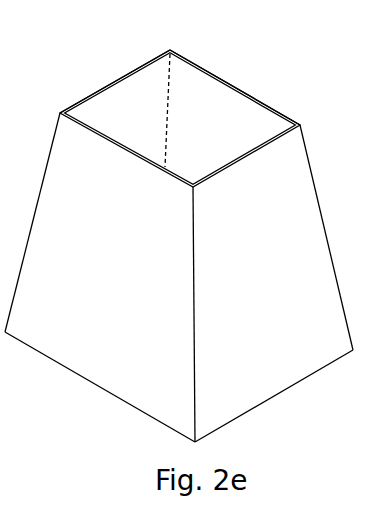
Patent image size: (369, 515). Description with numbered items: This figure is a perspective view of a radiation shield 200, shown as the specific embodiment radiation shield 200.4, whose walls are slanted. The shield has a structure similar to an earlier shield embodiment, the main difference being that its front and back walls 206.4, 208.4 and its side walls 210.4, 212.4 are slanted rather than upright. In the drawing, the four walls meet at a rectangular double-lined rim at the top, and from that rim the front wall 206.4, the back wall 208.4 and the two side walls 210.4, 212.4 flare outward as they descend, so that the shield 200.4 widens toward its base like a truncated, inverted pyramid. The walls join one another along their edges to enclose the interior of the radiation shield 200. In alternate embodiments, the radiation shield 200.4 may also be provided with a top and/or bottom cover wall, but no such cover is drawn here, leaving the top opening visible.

The radiation shield 200 is at (179, 224).
The radiation shield 200.4 is at (179, 224).
The front wall 206.4 is at (288, 380).
The back wall 208.4 is at (103, 87).
The side wall 210.4 is at (240, 90).
The side wall 212.4 is at (92, 375).